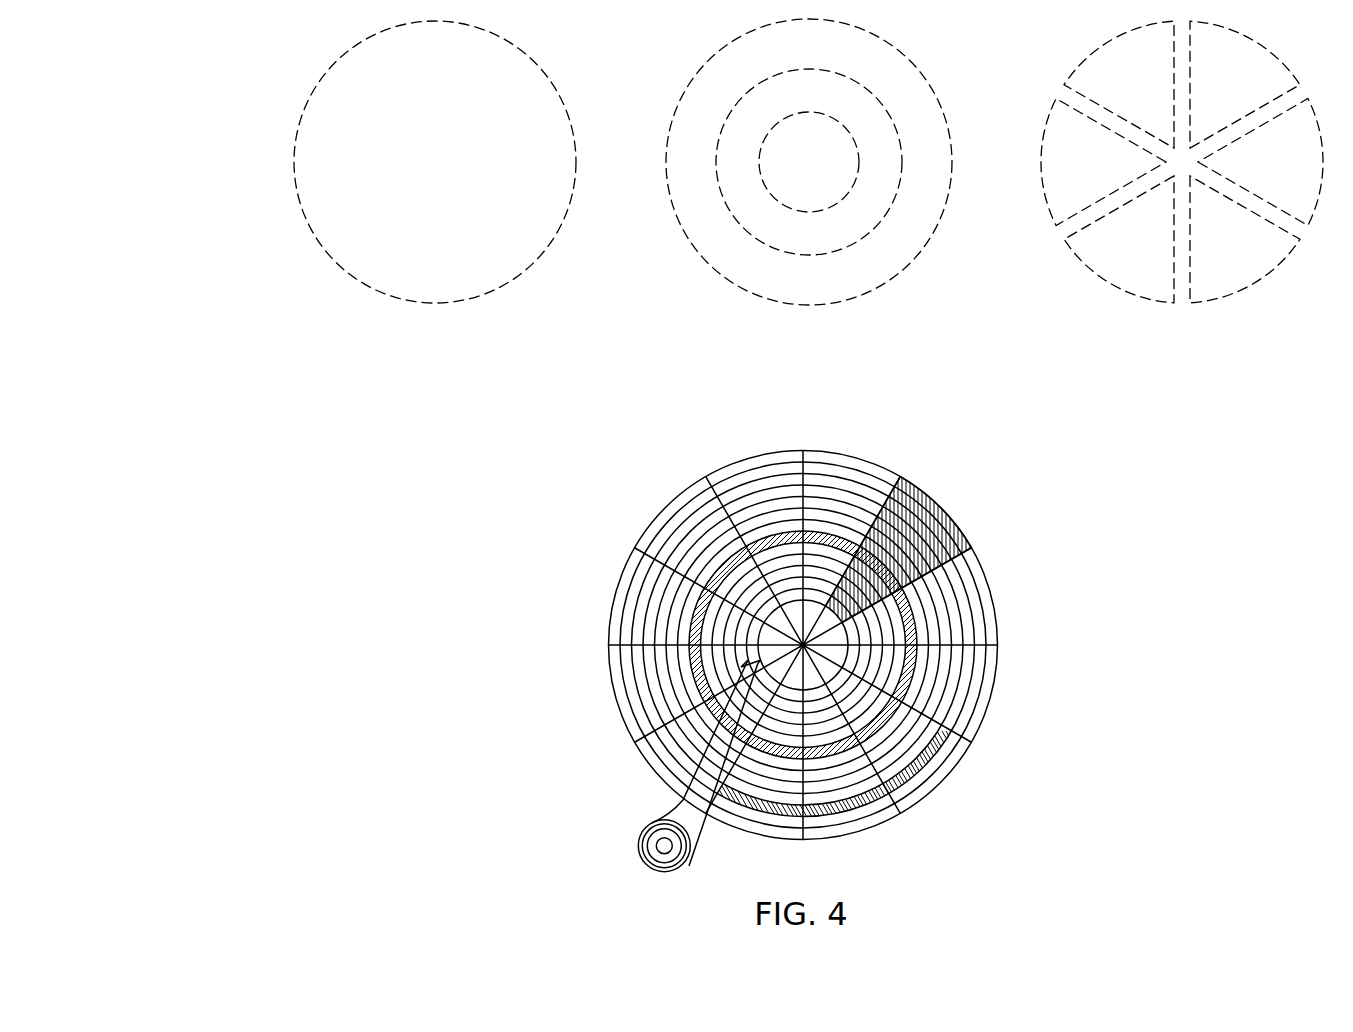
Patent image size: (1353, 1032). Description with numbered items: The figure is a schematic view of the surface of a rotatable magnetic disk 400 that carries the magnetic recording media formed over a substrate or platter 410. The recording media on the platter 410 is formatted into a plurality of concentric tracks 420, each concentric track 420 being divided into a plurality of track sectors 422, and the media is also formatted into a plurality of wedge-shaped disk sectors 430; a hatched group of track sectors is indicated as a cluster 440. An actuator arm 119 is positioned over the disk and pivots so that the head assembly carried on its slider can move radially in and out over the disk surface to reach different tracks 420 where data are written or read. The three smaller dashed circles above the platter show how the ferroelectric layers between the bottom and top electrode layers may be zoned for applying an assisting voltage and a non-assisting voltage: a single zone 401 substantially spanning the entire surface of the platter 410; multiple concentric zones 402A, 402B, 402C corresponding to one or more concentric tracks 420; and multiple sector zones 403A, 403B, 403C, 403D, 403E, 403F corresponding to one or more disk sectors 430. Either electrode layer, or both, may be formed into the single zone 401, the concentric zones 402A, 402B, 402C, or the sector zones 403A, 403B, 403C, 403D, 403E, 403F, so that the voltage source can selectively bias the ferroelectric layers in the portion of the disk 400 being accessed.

The rotatable magnetic disk 400 is at (178, 70).
The single zone 401 is at (458, 175).
The concentric zone 402A is at (780, 175).
The concentric zone 402B is at (780, 110).
The concentric zone 402C is at (780, 62).
The sector zone 403A is at (1268, 97).
The sector zone 403B is at (1308, 177).
The sector zone 403C is at (1268, 255).
The sector zone 403D is at (1096, 255).
The sector zone 403E is at (1053, 177).
The sector zone 403F is at (1097, 97).
The platter 410 is at (655, 507).
The concentric track 420 is at (776, 530).
The track sector 422 is at (882, 556).
The disk sector 430 is at (937, 512).
The cluster 440 is at (922, 770).
The actuator arm 119 is at (745, 662).